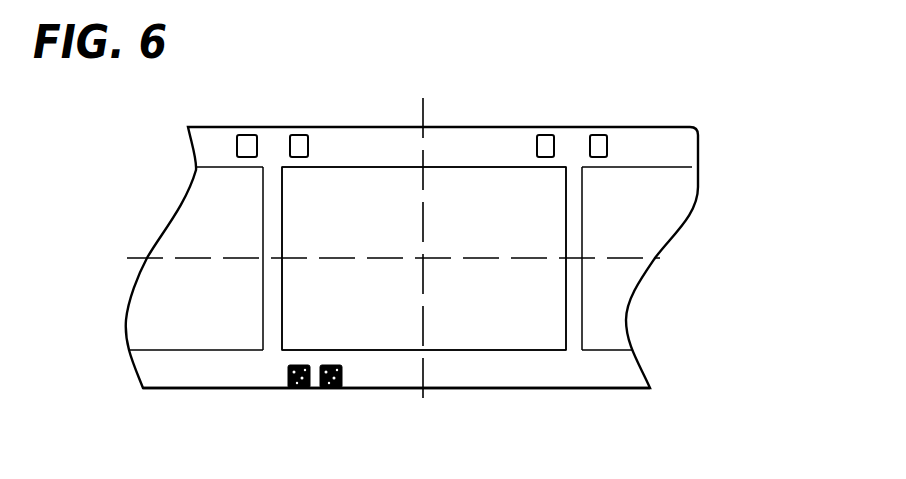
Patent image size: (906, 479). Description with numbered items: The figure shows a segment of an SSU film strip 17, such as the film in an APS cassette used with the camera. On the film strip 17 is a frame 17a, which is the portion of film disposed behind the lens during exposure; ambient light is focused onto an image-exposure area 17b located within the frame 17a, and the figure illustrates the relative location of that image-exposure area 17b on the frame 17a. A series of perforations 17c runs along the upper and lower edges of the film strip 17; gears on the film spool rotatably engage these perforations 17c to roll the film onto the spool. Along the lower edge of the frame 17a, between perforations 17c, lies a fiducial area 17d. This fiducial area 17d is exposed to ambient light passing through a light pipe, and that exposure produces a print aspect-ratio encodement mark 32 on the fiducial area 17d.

The SSU film strip 17 is at (697, 193).
The frame 17a is at (348, 124).
The image-exposure area 17b is at (472, 177).
The perforations 17c is at (594, 135).
The fiducial area 17d is at (505, 373).
The print aspect-ratio encodement mark 32 is at (330, 390).